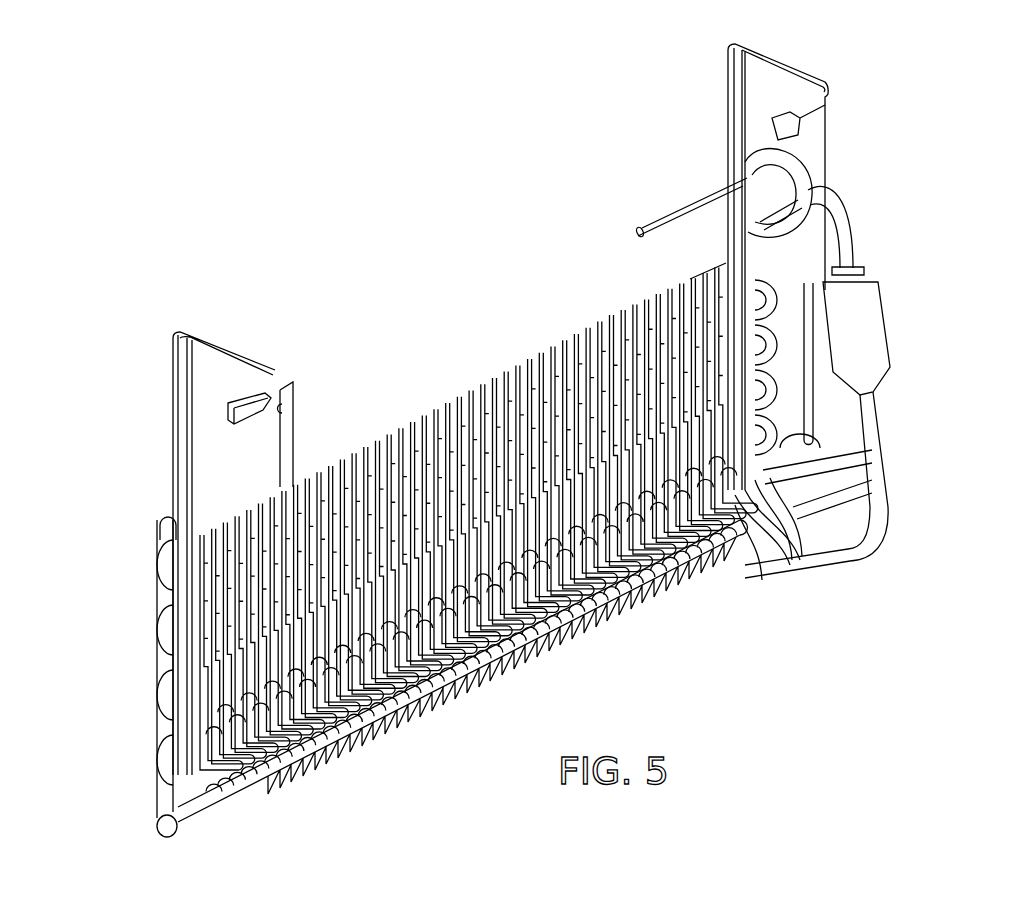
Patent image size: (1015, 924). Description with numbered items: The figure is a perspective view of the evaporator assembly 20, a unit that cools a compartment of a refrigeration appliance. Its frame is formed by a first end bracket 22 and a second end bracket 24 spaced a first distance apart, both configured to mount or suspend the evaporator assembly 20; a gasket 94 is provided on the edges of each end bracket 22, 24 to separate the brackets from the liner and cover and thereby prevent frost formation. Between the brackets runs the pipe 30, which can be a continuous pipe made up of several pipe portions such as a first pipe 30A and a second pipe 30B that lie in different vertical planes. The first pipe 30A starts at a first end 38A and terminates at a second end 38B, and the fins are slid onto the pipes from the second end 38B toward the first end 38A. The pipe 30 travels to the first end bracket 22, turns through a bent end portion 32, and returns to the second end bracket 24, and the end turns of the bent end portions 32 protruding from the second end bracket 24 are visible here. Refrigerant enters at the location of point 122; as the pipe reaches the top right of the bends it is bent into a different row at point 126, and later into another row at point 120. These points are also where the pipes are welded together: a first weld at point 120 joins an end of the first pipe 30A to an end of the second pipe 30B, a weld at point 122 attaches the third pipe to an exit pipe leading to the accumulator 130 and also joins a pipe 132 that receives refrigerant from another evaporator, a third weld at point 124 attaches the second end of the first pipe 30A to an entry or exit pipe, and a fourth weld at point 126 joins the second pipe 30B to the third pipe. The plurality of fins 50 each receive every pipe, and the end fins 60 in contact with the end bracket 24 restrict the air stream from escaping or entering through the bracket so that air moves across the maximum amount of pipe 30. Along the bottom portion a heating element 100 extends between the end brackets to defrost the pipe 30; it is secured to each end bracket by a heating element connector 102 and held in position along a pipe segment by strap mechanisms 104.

The evaporator assembly 20 is at (150, 386).
The first end bracket 22 is at (212, 350).
The second end bracket 24 is at (786, 90).
The gasket 94 is at (178, 437).
The fins 50 is at (445, 420).
The end fins 60 is at (748, 318).
The heating element 100 is at (486, 700).
The heating element connector 102 is at (285, 400).
The strap mechanisms 104 is at (738, 520).
The pipe 30 is at (823, 185).
The first pipe 30A is at (766, 268).
The second pipe 30B is at (868, 448).
The bent end portions 32 is at (780, 302).
The first end 38A is at (790, 468).
The second end 38B is at (768, 243).
The weld point 120 is at (820, 470).
The weld point 122 is at (896, 472).
The weld point 124 is at (748, 240).
The weld point 126 is at (832, 283).
The accumulator 130 is at (880, 362).
The pipe 132 is at (168, 838).